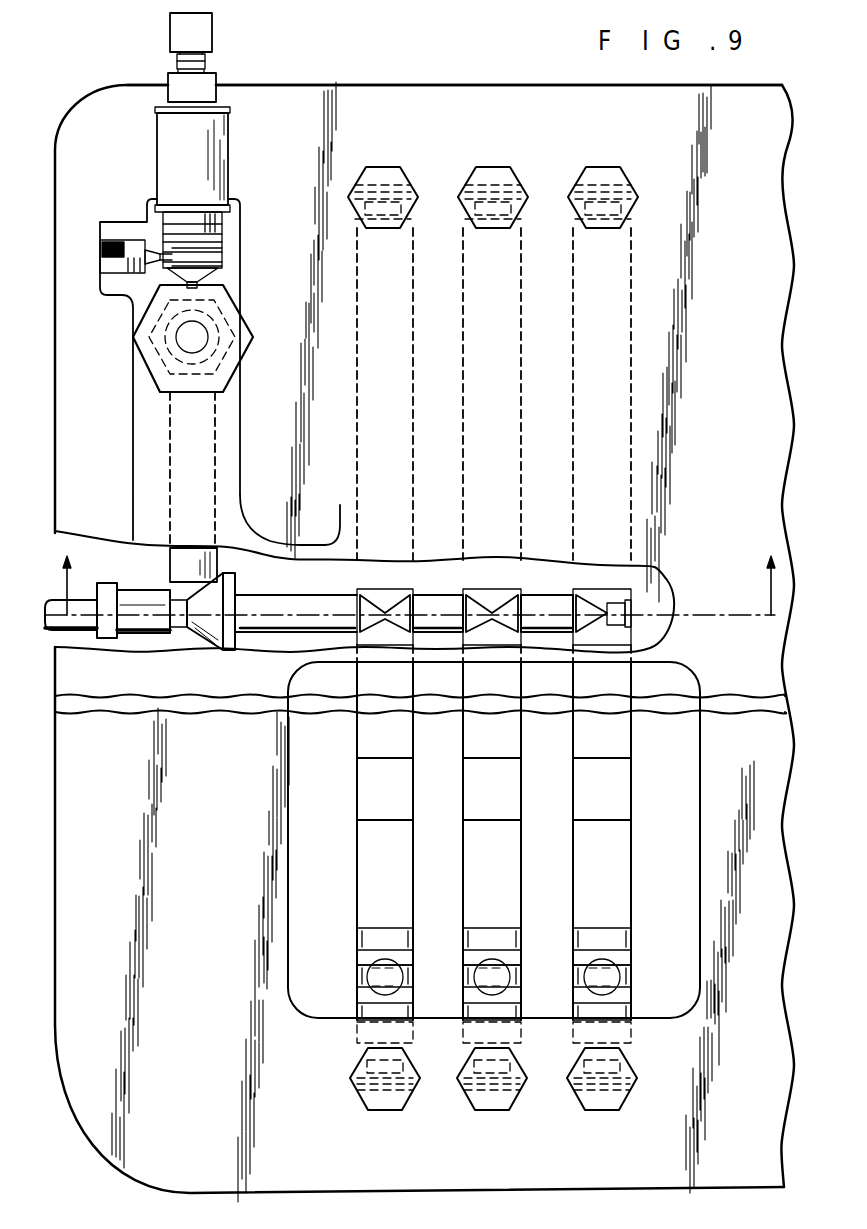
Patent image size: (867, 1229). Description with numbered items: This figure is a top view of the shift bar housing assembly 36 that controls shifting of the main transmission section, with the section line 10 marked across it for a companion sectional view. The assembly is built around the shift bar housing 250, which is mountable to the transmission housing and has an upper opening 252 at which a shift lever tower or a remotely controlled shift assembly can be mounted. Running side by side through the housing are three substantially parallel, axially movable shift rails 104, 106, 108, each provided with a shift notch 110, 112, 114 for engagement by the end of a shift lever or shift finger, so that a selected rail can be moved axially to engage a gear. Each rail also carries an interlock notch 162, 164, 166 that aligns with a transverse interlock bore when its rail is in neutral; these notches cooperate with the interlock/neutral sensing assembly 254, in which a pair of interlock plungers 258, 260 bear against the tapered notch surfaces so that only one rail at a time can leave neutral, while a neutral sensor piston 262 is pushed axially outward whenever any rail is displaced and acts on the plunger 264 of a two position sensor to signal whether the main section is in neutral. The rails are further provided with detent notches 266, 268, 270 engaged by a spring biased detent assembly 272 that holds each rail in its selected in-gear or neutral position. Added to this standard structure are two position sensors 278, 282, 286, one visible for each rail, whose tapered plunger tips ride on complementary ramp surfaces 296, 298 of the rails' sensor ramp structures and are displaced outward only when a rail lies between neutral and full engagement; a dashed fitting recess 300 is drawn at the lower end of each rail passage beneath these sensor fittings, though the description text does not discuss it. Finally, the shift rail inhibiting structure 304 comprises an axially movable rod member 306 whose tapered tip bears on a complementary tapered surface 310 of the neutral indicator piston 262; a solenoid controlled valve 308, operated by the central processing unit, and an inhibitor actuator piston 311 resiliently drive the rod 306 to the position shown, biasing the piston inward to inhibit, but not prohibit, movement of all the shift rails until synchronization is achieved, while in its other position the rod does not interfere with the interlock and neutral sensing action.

The section line 10— 10 is at (410, 585).
The shift bar housing assembly 36 is at (552, 78).
The shift rail 104 is at (359, 733).
The shift rail 106 is at (481, 733).
The shift rail 108 is at (591, 733).
The shift notch 110 is at (357, 795).
The shift notch 112 is at (481, 795).
The shift notch 114 is at (591, 795).
The interlock notch 162 is at (385, 590).
The interlock notch 164 is at (493, 590).
The interlock notch 166 is at (612, 592).
The shift bar housing 250 is at (742, 110).
The upper opening 252 is at (700, 782).
The interlock/neutral sensing assembly 254 is at (282, 660).
The interlock plunger 258 is at (547, 594).
The interlock plunger 260 is at (440, 594).
The neutral sensor piston 262 is at (304, 612).
The plunger of two position sensor 264 is at (135, 636).
The detent notch 266 is at (357, 938).
The detent notch 268 is at (357, 975).
The detent notch 270 is at (357, 1010).
The spring biased detent assembly 272 is at (385, 958).
The two position sensor 278 is at (390, 166).
The two position sensor 282 is at (507, 166).
The two position sensor 286 is at (618, 166).
The ramp surface 296 is at (407, 186).
The ramp surface 298 is at (412, 206).
The fitting recess 300 is at (357, 1048).
The shift rail inhibiting structure 304 is at (118, 78).
The rod member 306 is at (225, 418).
The solenoid controlled valve 308 is at (167, 165).
The tapered surface 310 is at (222, 590).
The inhibitor actuator piston 311 is at (152, 327).